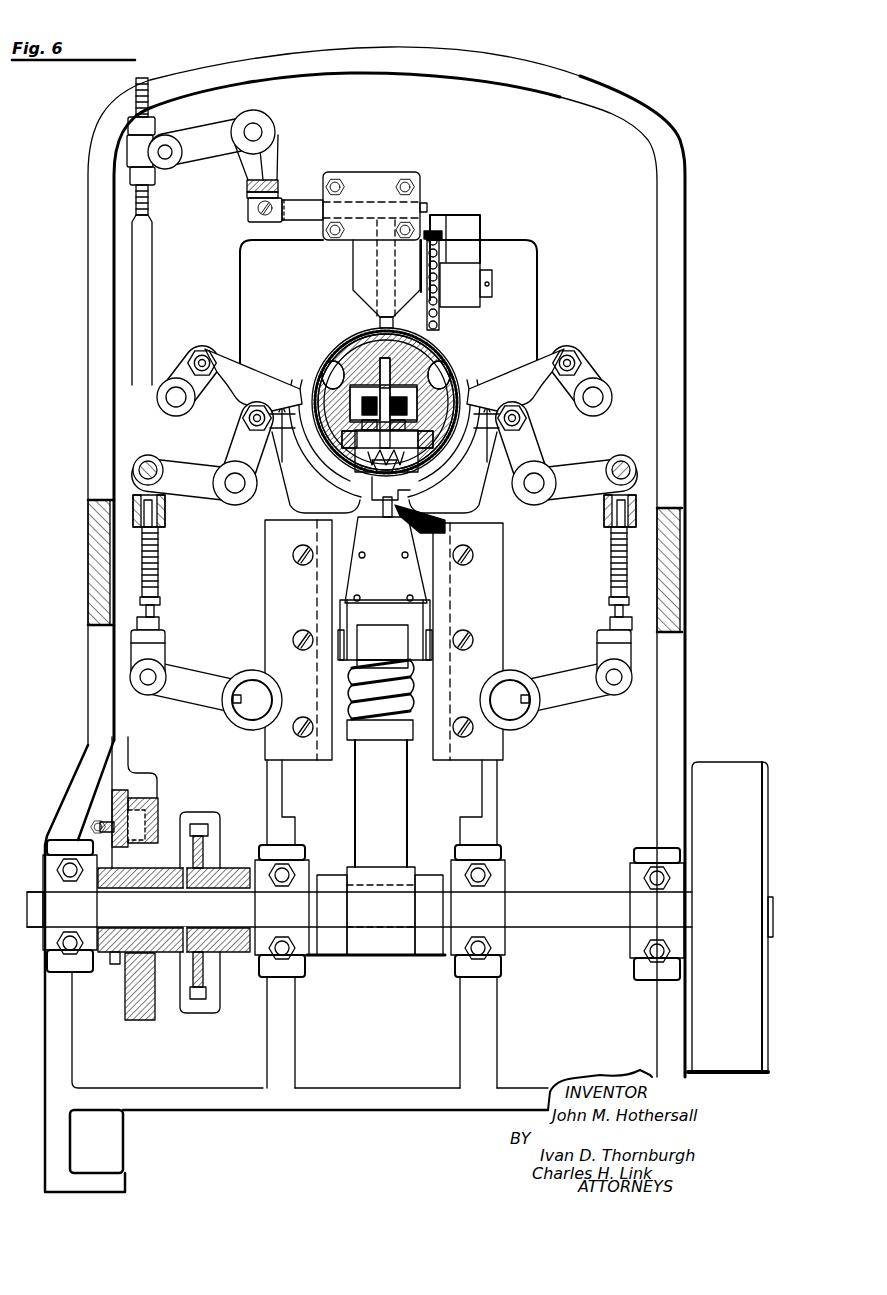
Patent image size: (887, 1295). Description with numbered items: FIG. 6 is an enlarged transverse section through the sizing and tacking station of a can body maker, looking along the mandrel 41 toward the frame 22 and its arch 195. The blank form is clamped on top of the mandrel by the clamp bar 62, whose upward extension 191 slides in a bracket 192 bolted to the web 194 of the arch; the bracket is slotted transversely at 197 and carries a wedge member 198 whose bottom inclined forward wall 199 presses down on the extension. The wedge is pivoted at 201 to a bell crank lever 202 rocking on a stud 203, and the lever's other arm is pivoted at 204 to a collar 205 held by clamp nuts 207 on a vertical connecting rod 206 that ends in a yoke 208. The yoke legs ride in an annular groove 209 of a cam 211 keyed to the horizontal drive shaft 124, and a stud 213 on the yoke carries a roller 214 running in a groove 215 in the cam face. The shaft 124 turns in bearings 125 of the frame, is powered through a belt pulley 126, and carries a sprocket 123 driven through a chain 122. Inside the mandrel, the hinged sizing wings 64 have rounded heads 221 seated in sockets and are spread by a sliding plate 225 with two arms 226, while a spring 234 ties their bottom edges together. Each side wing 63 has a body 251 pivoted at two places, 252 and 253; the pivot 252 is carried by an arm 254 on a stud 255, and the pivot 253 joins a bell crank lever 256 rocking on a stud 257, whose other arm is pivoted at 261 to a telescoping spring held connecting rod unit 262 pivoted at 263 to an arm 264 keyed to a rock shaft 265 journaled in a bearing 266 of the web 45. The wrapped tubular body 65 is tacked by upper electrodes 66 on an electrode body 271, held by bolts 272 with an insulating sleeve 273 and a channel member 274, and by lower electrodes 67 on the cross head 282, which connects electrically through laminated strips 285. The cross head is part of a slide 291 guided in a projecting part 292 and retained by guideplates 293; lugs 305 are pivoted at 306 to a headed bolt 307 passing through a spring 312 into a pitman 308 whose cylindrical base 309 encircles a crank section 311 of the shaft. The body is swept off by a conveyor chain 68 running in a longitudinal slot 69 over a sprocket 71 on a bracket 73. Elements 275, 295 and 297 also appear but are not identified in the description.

The frame 22 is at (682, 555).
The mandrel 41 is at (360, 330).
The web 45 is at (452, 831).
The clamp bar 62 is at (493, 278).
The side wings 63 is at (322, 362).
The hinged sizing wings 64 is at (318, 376).
The tubular body 65 is at (410, 320).
The upper electrodes 66 is at (420, 470).
The lower electrodes 67 is at (388, 514).
The conveyor chain 68 is at (458, 237).
The longitudinal slot 69 is at (450, 340).
The sprocket 71 is at (441, 258).
The bracket 73 is at (481, 260).
The chain 122 is at (208, 828).
The sprocket 123 is at (203, 848).
The horizontal drive shaft 124 is at (568, 903).
The bearings 125 is at (363, 910).
The belt pulley 126 is at (728, 770).
The upward extension 191 is at (380, 257).
The bracket 192 is at (421, 238).
The web 194 is at (590, 112).
The arch 195 is at (562, 76).
The slot 197 is at (367, 200).
The wedge member 198 is at (296, 209).
The bottom inclined forward wall 199 is at (423, 193).
The pivotal connection 201 is at (248, 212).
The bell crank lever 202 is at (278, 151).
The stud 203 is at (258, 128).
The pivotal connection 204 is at (165, 158).
The collar 205 is at (133, 150).
The vertical connecting rod 206 is at (153, 272).
The clamp nuts 207 is at (140, 127).
The yoke 208 is at (130, 790).
The annular groove 209 is at (116, 966).
The cam 211 is at (172, 830).
The stud 213 is at (92, 825).
The roller 214 is at (140, 810).
The groove 215 is at (127, 1017).
The rounded heads 221 is at (462, 363).
The sliding plate 225 is at (343, 467).
The arms 226 is at (447, 447).
The spring 234 is at (433, 483).
The body 251 is at (252, 378).
The pivot 252 is at (206, 356).
The pivot 253 is at (244, 418).
The arm 254 is at (185, 367).
The stud 255 is at (177, 401).
The bell crank lever 256 is at (384, 481).
The stud 257 is at (232, 490).
The pivotal connection 261 is at (153, 467).
The telescoping spring held connecting rod unit 262 is at (160, 566).
The pivotal connection 263 is at (167, 664).
The arm 264 is at (381, 689).
The rock shaft 265 is at (253, 710).
The bearing 266 is at (250, 670).
The electrode body 271 is at (437, 473).
The bolts 272 is at (419, 403).
The insulating sleeve 273 is at (420, 419).
The channel member 274 is at (356, 403).
The core 275 is at (355, 417).
The cross head 282 is at (385, 630).
The laminated strips 285 is at (420, 526).
The slide 291 is at (422, 687).
The projecting part 292 is at (498, 553).
The guideplates 293 is at (473, 576).
The bracket 295 is at (370, 498).
The plate 297 is at (386, 560).
The lugs 305 is at (422, 648).
The pivotal connection 306 is at (340, 633).
The headed bolt 307 is at (382, 642).
The pitman 308 is at (380, 793).
The cylindrical base 309 is at (398, 943).
The crank section 311 is at (332, 942).
The spring 312 is at (410, 708).